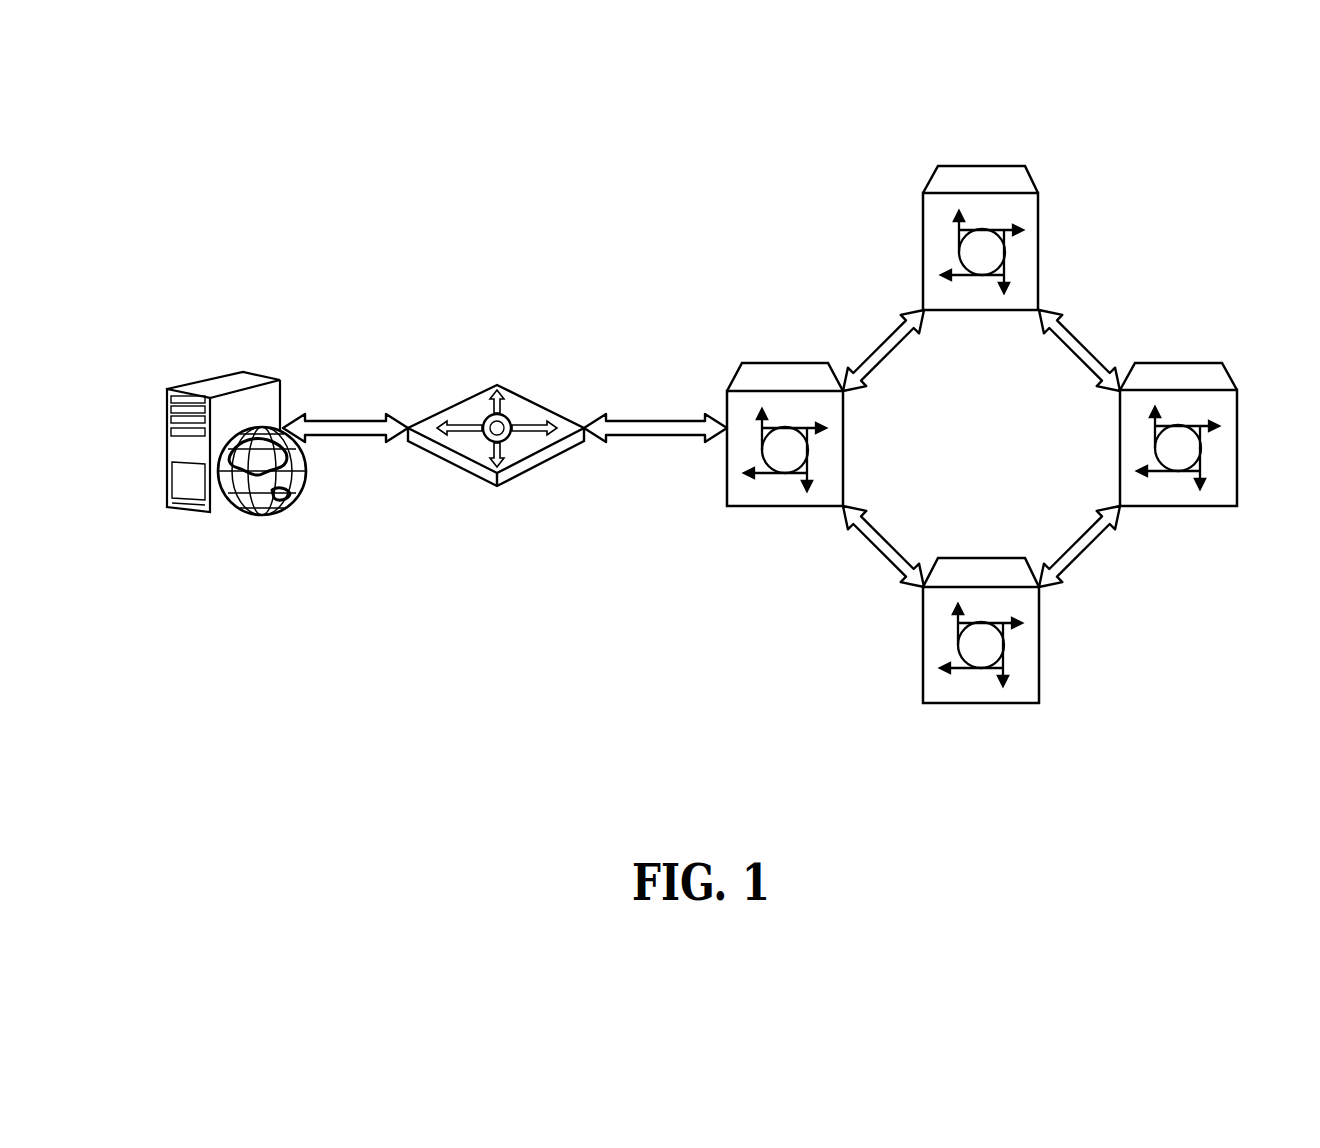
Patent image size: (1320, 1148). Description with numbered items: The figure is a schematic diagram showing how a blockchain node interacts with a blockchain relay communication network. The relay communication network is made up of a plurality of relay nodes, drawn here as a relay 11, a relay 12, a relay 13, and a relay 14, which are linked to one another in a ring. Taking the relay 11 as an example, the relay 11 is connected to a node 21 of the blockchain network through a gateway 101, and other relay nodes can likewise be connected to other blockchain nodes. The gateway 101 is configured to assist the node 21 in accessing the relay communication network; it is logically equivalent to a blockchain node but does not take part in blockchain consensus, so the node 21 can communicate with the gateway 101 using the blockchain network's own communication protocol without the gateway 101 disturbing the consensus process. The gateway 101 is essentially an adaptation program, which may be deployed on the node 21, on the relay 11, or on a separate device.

The relay 11 is at (782, 370).
The relay 12 is at (978, 173).
The relay 13 is at (978, 565).
The relay 14 is at (1175, 370).
The gateway 101 is at (515, 402).
The node 21 is at (253, 377).